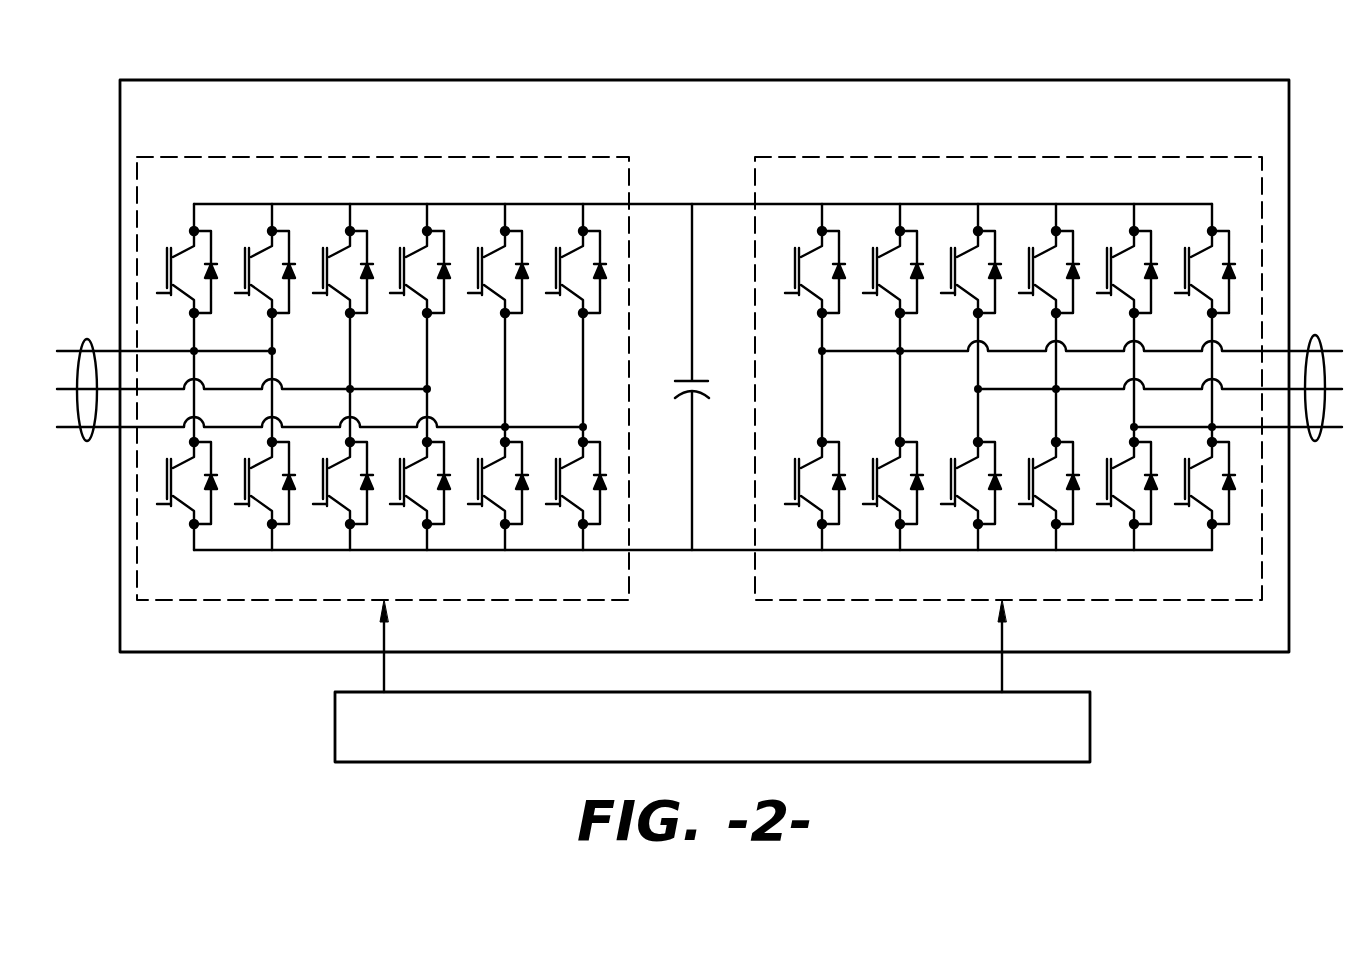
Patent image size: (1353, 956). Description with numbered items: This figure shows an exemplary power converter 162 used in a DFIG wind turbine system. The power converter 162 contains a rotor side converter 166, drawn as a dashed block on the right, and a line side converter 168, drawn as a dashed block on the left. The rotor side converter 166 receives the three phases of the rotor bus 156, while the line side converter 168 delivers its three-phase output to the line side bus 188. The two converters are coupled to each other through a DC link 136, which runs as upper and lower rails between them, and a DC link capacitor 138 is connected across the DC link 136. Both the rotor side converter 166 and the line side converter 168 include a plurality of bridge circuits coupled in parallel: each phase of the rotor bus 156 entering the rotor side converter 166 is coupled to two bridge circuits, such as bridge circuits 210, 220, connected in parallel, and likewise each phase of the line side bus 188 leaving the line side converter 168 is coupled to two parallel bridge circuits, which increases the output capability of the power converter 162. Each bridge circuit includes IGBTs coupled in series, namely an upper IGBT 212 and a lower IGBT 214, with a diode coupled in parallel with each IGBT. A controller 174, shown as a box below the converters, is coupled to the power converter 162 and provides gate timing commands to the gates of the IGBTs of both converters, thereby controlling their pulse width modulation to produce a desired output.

The power converter 162 is at (782, 80).
The line side converter 168 is at (343, 157).
The rotor side converter 166 is at (1008, 353).
The DC link 136 is at (654, 204).
The DC link capacitor 138 is at (697, 381).
The bridge circuit 210 is at (812, 238).
The bridge circuit 220 is at (903, 212).
The upper IGBT 212 is at (786, 296).
The lower IGBT 214 is at (795, 477).
The line side bus 188 is at (87, 340).
The rotor bus 156 is at (1313, 337).
The controller 174 is at (1090, 733).